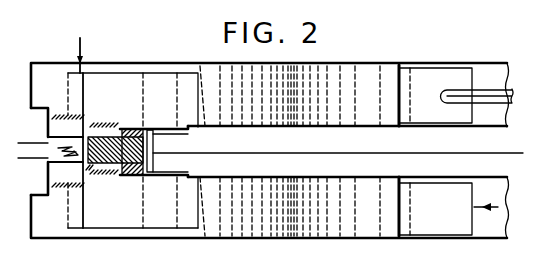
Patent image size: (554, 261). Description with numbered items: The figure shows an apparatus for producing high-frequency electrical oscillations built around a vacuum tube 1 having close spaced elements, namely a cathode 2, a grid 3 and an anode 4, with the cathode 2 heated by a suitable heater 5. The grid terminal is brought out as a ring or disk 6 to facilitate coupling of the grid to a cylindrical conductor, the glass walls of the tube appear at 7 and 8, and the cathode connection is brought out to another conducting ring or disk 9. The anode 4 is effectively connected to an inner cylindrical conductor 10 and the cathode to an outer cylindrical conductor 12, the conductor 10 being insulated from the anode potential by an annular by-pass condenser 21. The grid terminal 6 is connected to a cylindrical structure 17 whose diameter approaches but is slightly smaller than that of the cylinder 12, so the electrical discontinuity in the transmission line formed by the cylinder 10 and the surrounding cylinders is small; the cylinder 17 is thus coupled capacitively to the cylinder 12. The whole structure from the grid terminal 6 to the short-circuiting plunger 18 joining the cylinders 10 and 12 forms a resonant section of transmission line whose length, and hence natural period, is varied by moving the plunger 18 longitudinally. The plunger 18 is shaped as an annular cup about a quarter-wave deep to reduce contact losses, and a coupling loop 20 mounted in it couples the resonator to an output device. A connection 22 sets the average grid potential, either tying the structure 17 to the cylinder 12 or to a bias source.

The vacuum tube 1 is at (43, 143).
The cathode 2 is at (60, 163).
The grid 3 is at (88, 167).
The anode 4 is at (124, 152).
The heater 5 is at (62, 151).
The grid terminal 6 is at (85, 171).
The glass wall 7 is at (62, 117).
The glass wall 8 is at (108, 124).
The conducting ring 9 is at (47, 115).
The inner cylindrical conductor 10 is at (360, 127).
The outer cylindrical conductor 12 is at (338, 63).
The cylindrical structure 17 is at (132, 230).
The short-circuiting plunger 18 is at (473, 113).
The coupling loop 20 is at (446, 95).
The annular by-pass condenser 21 is at (168, 180).
The connection 22 is at (81, 44).